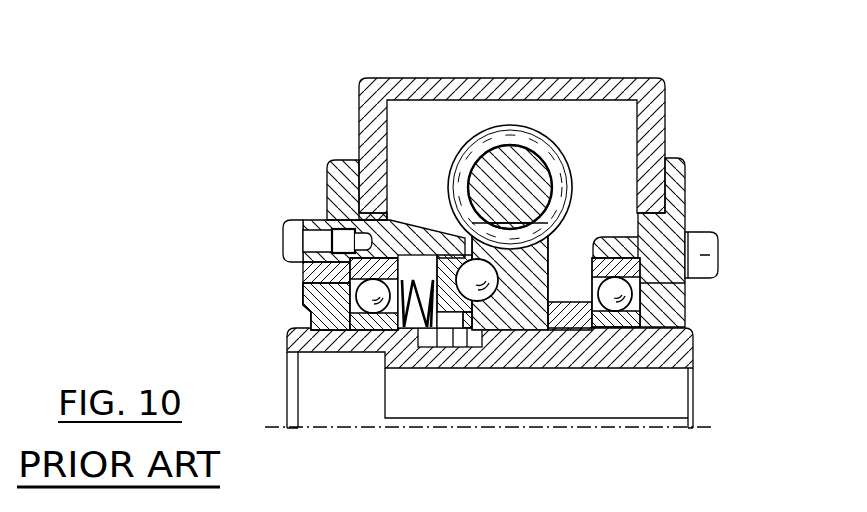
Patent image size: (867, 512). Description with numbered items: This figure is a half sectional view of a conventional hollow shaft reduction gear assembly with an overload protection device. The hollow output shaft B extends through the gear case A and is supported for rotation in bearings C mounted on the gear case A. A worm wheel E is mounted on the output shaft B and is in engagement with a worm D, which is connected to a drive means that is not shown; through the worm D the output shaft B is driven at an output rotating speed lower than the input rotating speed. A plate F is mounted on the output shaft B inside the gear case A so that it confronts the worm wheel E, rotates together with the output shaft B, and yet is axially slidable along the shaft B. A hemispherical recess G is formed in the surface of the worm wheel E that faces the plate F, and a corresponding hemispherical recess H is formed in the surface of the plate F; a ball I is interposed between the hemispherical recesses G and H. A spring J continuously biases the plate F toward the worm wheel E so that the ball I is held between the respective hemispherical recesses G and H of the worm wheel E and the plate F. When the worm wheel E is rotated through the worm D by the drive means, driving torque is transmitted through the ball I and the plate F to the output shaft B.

The gear case A is at (551, 77).
The hollow output shaft B is at (670, 345).
The bearings C is at (372, 314).
The worm D is at (493, 127).
The worm wheel E is at (528, 270).
The plate F is at (442, 238).
The hemispherical recess G is at (532, 300).
The hemispherical recess H is at (449, 312).
The ball I is at (468, 258).
The spring J is at (404, 328).